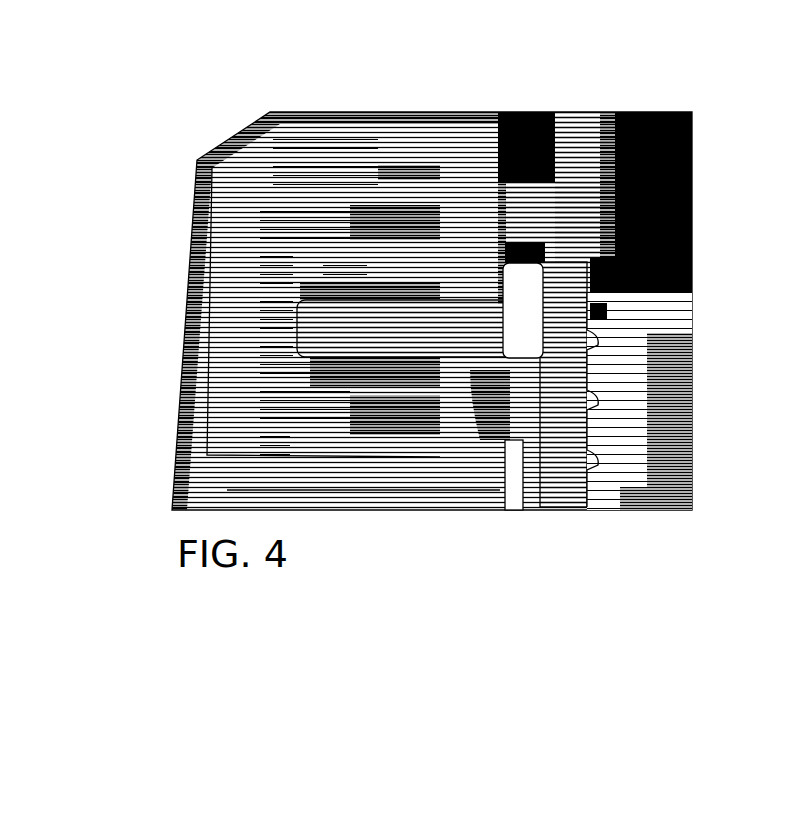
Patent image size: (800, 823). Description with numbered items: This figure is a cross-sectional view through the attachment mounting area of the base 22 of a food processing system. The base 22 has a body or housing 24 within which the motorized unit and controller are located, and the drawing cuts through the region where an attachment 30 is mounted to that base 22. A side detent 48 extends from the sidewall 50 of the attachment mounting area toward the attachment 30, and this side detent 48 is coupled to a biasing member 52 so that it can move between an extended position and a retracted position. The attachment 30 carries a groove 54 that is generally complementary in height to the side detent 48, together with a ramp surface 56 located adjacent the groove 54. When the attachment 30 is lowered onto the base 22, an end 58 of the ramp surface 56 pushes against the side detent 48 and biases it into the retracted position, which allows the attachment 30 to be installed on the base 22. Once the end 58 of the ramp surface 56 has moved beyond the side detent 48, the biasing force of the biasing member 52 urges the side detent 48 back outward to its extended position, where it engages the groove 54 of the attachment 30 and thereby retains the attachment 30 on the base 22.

The base 22 is at (158, 250).
The housing 24 is at (205, 368).
The attachment 30 is at (665, 110).
The side detent 48 is at (413, 330).
The sidewall 50 is at (512, 128).
The biasing member 52 is at (383, 367).
The groove 54 is at (515, 300).
The ramp surface 56 is at (493, 403).
The end of the ramp surface 58 is at (507, 443).